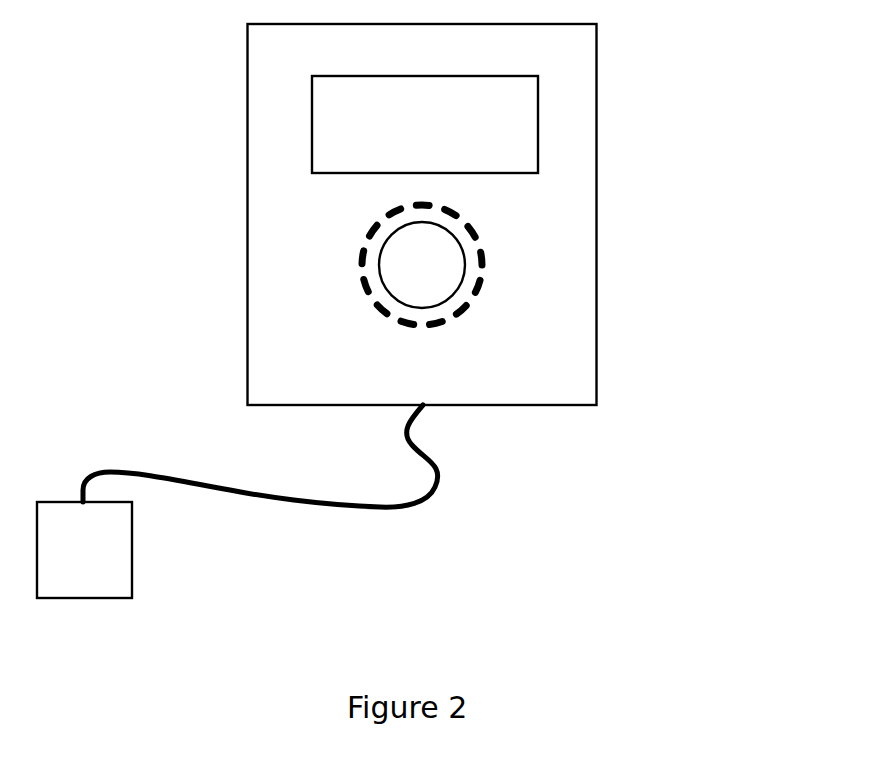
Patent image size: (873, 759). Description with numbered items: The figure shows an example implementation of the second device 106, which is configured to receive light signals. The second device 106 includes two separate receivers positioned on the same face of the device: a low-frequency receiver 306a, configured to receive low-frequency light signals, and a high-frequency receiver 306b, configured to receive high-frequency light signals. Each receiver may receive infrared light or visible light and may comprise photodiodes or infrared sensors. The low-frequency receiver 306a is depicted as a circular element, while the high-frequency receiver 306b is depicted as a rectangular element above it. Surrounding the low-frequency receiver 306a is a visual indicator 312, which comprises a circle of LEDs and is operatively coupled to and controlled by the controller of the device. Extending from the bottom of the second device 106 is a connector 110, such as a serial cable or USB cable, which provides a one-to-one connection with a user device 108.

The second device 106 is at (597, 97).
The high-frequency receiver 306b is at (538, 173).
The low-frequency receiver 306a is at (379, 269).
The visual indicator 312 is at (484, 256).
The connector 110 is at (412, 507).
The user device 108 is at (132, 595).